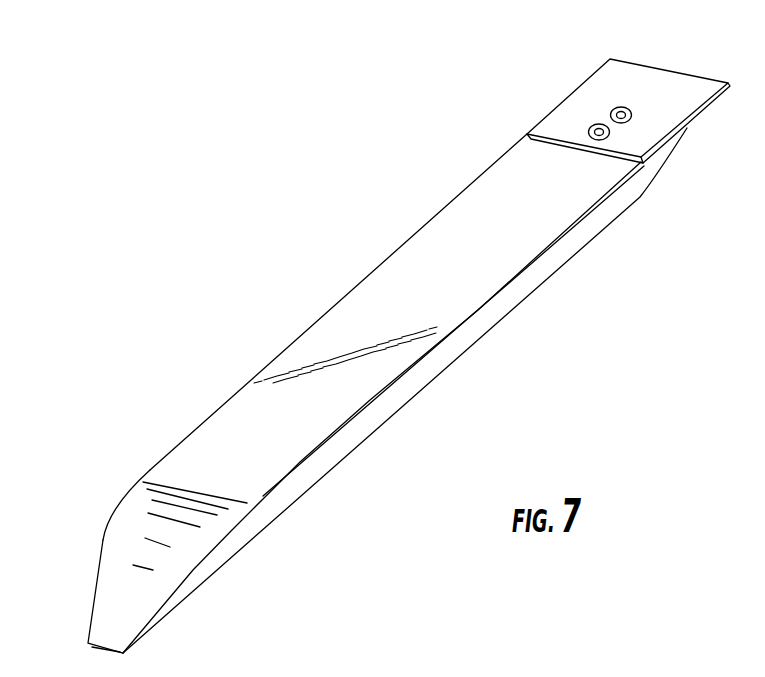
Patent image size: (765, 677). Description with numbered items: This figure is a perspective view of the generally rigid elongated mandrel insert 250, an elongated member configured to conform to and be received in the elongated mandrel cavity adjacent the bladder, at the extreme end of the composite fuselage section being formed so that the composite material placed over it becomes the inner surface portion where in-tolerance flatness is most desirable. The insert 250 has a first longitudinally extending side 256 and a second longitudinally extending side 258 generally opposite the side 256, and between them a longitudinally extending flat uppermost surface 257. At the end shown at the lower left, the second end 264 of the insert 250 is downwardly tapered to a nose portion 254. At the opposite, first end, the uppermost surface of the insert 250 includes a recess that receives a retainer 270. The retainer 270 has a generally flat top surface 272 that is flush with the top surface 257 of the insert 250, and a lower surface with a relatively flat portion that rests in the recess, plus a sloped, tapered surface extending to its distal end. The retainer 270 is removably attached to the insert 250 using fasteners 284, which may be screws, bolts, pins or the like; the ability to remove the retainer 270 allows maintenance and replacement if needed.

The insert 250 is at (355, 402).
The nose portion 254 is at (531, 216).
The first longitudinally extending side 256 is at (93, 593).
The flat uppermost surface 257 is at (202, 457).
The second longitudinally extending side 258 is at (213, 560).
The second end 264 is at (108, 583).
The retainer 270 is at (628, 120).
The flat top surface 272 is at (648, 106).
The fasteners 284 is at (610, 136).